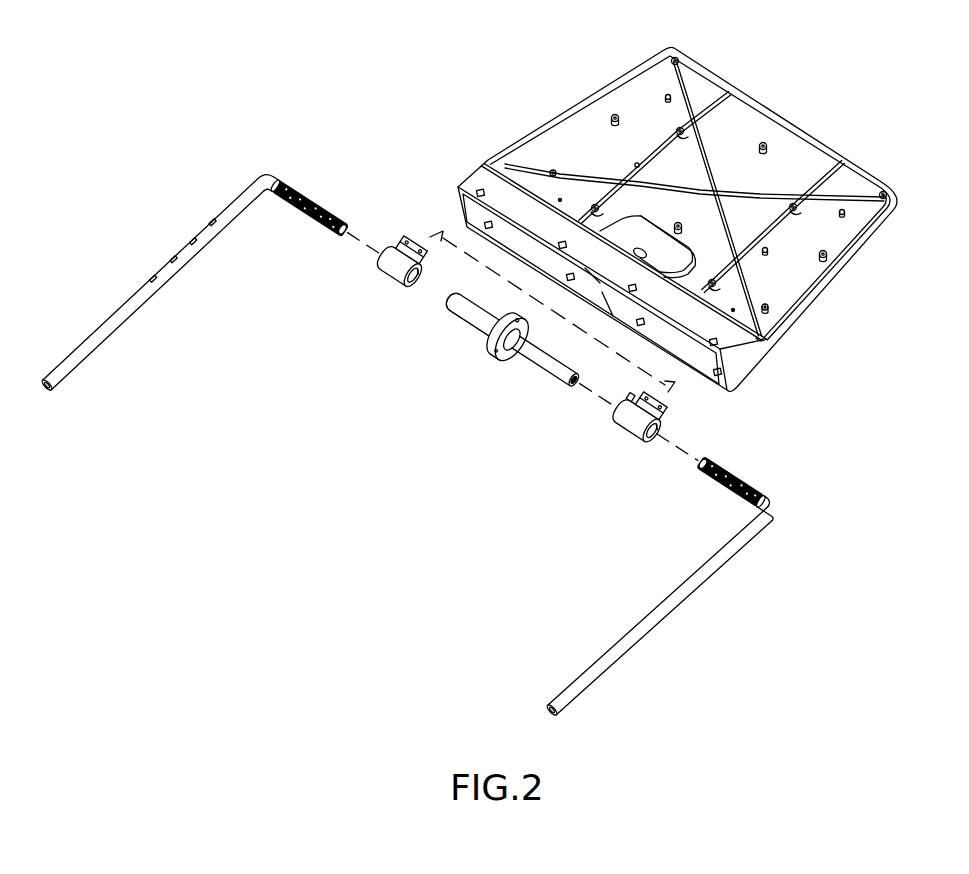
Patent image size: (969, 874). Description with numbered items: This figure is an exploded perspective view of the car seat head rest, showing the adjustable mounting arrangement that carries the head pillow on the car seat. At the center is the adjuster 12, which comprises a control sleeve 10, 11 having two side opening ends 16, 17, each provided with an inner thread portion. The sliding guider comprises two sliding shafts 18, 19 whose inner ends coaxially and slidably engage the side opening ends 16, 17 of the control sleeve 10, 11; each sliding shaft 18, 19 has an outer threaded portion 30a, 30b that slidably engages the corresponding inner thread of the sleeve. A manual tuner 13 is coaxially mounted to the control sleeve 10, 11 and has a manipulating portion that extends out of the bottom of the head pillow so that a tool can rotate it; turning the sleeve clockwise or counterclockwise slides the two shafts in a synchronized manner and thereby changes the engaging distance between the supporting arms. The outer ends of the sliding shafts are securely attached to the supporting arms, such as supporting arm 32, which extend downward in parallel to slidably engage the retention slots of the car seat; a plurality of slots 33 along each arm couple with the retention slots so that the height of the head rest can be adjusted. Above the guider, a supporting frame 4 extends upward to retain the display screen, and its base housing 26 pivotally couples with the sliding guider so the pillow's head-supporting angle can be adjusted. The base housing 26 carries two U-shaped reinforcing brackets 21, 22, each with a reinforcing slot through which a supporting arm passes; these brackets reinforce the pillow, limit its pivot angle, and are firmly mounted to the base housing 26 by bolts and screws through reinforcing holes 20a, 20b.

The supporting frame 4 is at (728, 127).
The base housing 26 is at (493, 177).
The outer threaded portion 30a is at (295, 187).
The outer threaded portion 30b is at (743, 473).
The sliding shaft 18 is at (320, 203).
The sliding shaft 19 is at (765, 485).
The reinforcing hole 20a is at (420, 252).
The reinforcing hole 20b is at (662, 402).
The slot 33 is at (203, 253).
The control sleeve 10 is at (123, 323).
The U-shaped reinforcing bracket 21 is at (388, 273).
The U-shaped reinforcing bracket 22 is at (630, 428).
The side opening end 16 is at (440, 293).
The manual tuner 13 is at (495, 352).
The adjuster 12 is at (508, 357).
The control sleeve 11 is at (557, 380).
The side opening end 17 is at (575, 387).
The supporting arm 32 is at (640, 633).